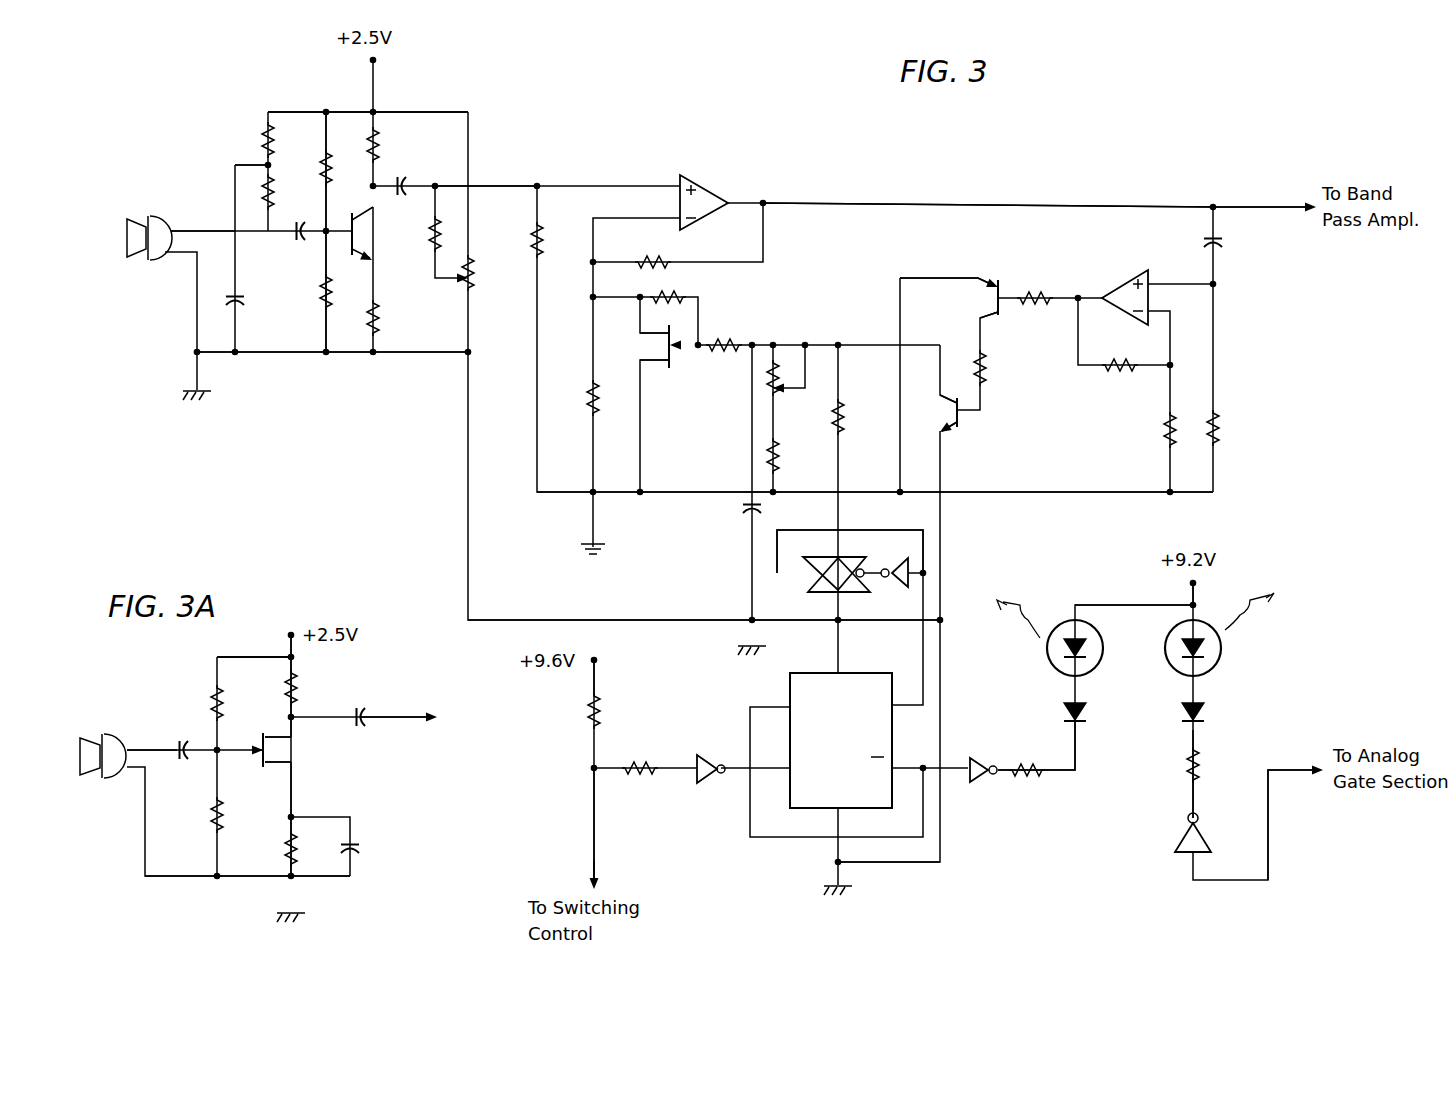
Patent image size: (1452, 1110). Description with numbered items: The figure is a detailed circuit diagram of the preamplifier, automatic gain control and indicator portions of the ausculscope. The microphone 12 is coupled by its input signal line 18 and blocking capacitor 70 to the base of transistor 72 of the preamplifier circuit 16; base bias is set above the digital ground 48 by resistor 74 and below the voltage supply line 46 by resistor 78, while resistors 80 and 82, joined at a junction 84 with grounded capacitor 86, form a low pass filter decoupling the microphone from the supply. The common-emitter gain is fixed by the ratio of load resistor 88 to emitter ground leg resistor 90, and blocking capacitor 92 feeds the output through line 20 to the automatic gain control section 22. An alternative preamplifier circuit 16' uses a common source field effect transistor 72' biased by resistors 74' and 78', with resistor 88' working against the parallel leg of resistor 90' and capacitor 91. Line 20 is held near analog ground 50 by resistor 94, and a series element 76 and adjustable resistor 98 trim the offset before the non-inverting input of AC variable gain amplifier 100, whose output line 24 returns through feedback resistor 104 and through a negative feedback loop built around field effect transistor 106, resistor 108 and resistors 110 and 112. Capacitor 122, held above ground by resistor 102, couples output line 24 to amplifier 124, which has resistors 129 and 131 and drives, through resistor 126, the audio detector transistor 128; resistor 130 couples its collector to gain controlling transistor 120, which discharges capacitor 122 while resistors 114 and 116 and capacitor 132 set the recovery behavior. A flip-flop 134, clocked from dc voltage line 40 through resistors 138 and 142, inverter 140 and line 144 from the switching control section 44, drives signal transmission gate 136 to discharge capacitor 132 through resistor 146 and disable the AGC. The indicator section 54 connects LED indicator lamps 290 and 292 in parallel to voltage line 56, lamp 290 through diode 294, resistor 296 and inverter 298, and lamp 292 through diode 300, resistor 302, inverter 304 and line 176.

In FIG. 3, the microphone 12 is at (168, 218).
In FIG. 3A, the microphone 12 is at (112, 740).
In FIG. 3, the input signal line 18 is at (208, 228).
In FIG. 3A, the input signal line 18 is at (150, 738).
In FIG. 3, the preamplifier circuit 16 is at (368, 290).
In FIG. 3A, the alternative preamplifier circuit 16' is at (324, 727).
In FIG. 3, the line 20 is at (575, 186).
In FIG. 3A, the line 20 is at (410, 717).
In FIG. 3, the automatic gain control section 22 is at (1037, 187).
In FIG. 3, the output line 24 is at (1250, 205).
In FIG. 3, the dc voltage line 40 is at (600, 660).
In FIG. 3, the switching control section 44 is at (611, 902).
In FIG. 3, the voltage supply line 46 is at (300, 110).
In FIG. 3A, the voltage supply line 46 is at (253, 656).
In FIG. 3, the digital ground 48 is at (282, 355).
In FIG. 3A, the digital ground 48 is at (240, 877).
In FIG. 3, the analog ground 50 is at (676, 494).
In FIG. 3, the indicator section 54 is at (1112, 795).
In FIG. 3, the voltage line 56 is at (1200, 583).
In FIG. 3, the blocking capacitor 70 is at (304, 240).
In FIG. 3A, the blocking capacitor 70 is at (183, 740).
In FIG. 3, the transistor 72 is at (383, 233).
In FIG. 3A, the field effect transistor 72' is at (324, 761).
In FIG. 3, the resistor 74 is at (301, 296).
In FIG. 3A, the resistor 74' is at (191, 825).
In FIG. 3, the potentiometer 76 is at (432, 260).
In FIG. 3, the resistor 78 is at (336, 129).
In FIG. 3A, the resistor 78' is at (240, 703).
In FIG. 3, the resistor 80 is at (262, 135).
In FIG. 3, the resistor 82 is at (272, 200).
In FIG. 3, the junction 84 is at (265, 162).
In FIG. 3, the grounded capacitor 86 is at (222, 298).
In FIG. 3, the load resistor 88 is at (403, 121).
In FIG. 3A, the resistor 88' is at (318, 687).
In FIG. 3, the emitter ground leg resistor 90 is at (399, 343).
In FIG. 3A, the resistor 90' is at (325, 871).
In FIG. 3A, the capacitor 91 is at (362, 850).
In FIG. 3, the blocking capacitor 92 is at (410, 185).
In FIG. 3A, the blocking capacitor 92 is at (365, 705).
In FIG. 3, the resistor 94 is at (533, 247).
In FIG. 3, the adjustable resistor 98 is at (472, 268).
In FIG. 3, the AC variable gain amplifier 100 is at (708, 190).
In FIG. 3, the resistor 102 is at (1218, 425).
In FIG. 3, the feedback resistor 104 is at (660, 258).
In FIG. 3, the field effect transistor 106 is at (660, 368).
In FIG. 3, the resistor 108 is at (585, 395).
In FIG. 3, the resistor 110 is at (718, 330).
In FIG. 3, the resistor 112 is at (665, 295).
In FIG. 3, the resistor 114 is at (768, 386).
In FIG. 3, the resistor 116 is at (768, 455).
In FIG. 3, the gain controlling transistor 120 is at (955, 435).
In FIG. 3, the capacitor 122 is at (1225, 245).
In FIG. 3, the amplifier 124 is at (1128, 295).
In FIG. 3, the resistor 126 is at (1030, 295).
In FIG. 3, the transistor 128 is at (988, 290).
In FIG. 3, the resistor 129 is at (1165, 430).
In FIG. 3, the resistor 130 is at (990, 368).
In FIG. 3, the feedback resistor 131 is at (1120, 372).
In FIG. 3, the capacitor 132 is at (748, 510).
In FIG. 3, the flip-flop 134 is at (805, 808).
In FIG. 3, the signal transmission gate 136 is at (882, 572).
In FIG. 3, the resistor 138 is at (636, 778).
In FIG. 3, the inverter 140 is at (704, 780).
In FIG. 3, the resistor 142 is at (603, 708).
In FIG. 3, the line 144 is at (592, 833).
In FIG. 3, the resistor 146 is at (845, 420).
In FIG. 3, the line 176 is at (1268, 800).
In FIG. 3, the LED indicator lamp 290 is at (1055, 620).
In FIG. 3, the LED indicator lamp 292 is at (1223, 655).
In FIG. 3, the diode 294 is at (1062, 715).
In FIG. 3, the resistor 296 is at (1027, 782).
In FIG. 3, the inverter 298 is at (980, 765).
In FIG. 3, the diode 300 is at (1205, 715).
In FIG. 3, the resistor 302 is at (1185, 768).
In FIG. 3, the inverter 304 is at (1180, 846).